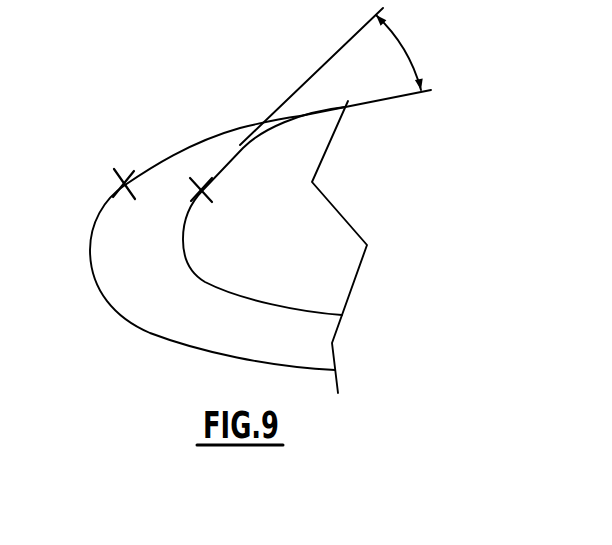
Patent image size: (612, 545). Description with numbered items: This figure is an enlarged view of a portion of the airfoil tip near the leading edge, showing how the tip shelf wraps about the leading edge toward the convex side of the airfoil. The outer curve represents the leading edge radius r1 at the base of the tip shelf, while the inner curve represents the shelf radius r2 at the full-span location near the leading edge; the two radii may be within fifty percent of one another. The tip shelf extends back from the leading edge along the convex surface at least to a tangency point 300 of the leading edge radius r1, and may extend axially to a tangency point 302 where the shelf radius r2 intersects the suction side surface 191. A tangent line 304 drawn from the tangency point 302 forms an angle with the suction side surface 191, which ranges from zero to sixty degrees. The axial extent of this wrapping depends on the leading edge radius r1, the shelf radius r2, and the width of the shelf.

The suction side surface 191 is at (366, 103).
The tangency point of the leading edge radius 300 is at (121, 185).
The tangency point of the shelf radius 302 is at (206, 190).
The tangent line 304 is at (334, 57).
The leading edge radius r1 is at (90, 284).
The shelf radius r2 is at (181, 266).